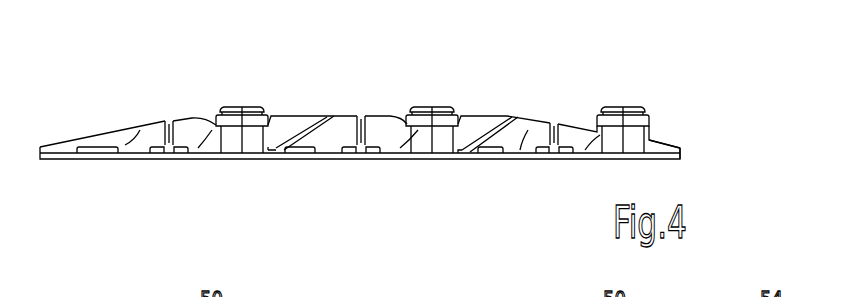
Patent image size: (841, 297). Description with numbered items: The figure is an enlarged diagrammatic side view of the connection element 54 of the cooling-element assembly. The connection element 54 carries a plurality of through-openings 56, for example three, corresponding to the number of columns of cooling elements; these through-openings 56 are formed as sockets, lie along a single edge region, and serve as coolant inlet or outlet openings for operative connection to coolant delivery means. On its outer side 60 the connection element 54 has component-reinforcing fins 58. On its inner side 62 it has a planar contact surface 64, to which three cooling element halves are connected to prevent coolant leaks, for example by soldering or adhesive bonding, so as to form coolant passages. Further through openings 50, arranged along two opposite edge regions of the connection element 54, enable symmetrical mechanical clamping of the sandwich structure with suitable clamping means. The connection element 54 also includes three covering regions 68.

The outer side 60 is at (112, 118).
The through openings 50 is at (172, 120).
The through-openings 56 is at (253, 119).
The component-reinforcing fins 58 is at (205, 140).
The covering regions 68 is at (95, 150).
The inner side 62 is at (303, 166).
The planar contact surface 64 is at (375, 166).
The connection element 54 is at (700, 125).